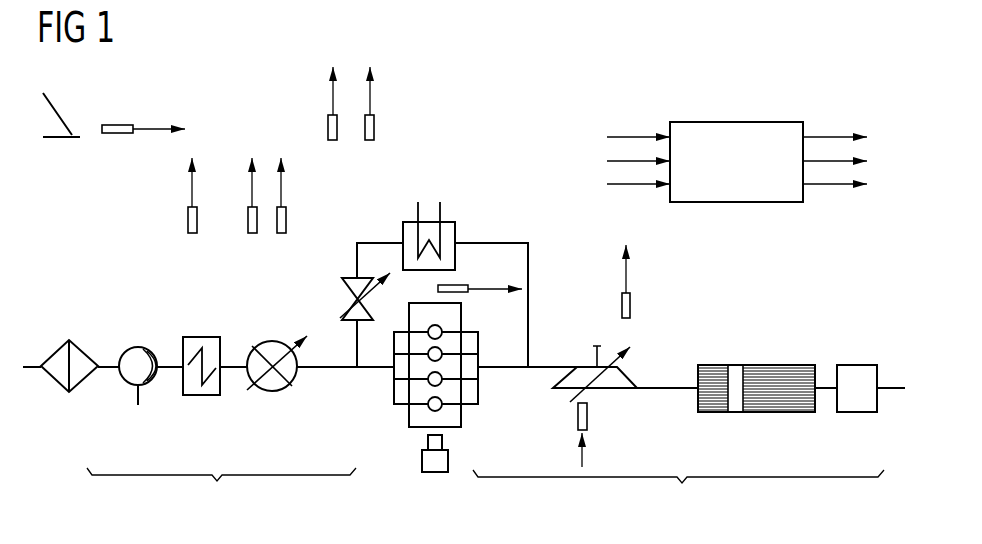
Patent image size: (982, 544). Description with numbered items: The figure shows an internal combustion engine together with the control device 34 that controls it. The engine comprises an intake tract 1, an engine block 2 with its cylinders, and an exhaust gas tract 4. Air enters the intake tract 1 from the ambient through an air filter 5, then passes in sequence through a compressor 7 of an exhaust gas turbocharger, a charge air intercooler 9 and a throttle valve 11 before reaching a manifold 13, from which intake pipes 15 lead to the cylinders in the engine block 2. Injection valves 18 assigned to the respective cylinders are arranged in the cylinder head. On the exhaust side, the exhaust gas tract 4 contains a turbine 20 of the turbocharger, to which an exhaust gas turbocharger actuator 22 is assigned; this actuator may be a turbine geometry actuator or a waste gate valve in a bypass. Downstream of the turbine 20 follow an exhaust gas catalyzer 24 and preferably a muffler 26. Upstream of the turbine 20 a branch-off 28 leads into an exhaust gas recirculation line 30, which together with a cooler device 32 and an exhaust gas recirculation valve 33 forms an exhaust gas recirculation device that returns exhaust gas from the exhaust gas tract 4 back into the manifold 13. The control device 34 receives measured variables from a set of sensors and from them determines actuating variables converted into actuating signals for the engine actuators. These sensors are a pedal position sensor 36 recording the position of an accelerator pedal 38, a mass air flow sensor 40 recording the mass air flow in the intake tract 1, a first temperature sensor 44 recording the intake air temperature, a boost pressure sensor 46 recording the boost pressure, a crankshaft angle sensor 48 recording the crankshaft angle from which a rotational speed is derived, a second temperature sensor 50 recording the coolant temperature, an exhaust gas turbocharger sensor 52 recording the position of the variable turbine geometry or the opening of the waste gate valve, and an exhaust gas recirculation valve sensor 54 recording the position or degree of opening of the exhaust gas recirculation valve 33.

The intake tract 1 is at (221, 489).
The engine block 2 is at (437, 378).
The exhaust gas tract 4 is at (678, 491).
The air filter 5 is at (88, 382).
The compressor 7 is at (140, 347).
The charge air intercooler 9 is at (205, 337).
The throttle valve 11 is at (272, 342).
The manifold 13 is at (315, 368).
The intake pipes 15 is at (401, 407).
The injection valves 18 is at (436, 472).
The turbine 20 is at (635, 377).
The exhaust gas turbocharger actuator 22 is at (587, 418).
The exhaust gas catalyzer 24 is at (756, 365).
The muffler 26 is at (860, 412).
The branch-off 28 is at (527, 378).
The exhaust gas recirculation line 30 is at (530, 300).
The cooler device 32 is at (455, 232).
The exhaust gas recirculation valve 33 is at (356, 278).
The control device 34 is at (737, 122).
The pedal position sensor 36 is at (117, 134).
The accelerator pedal 38 is at (68, 117).
The mass air flow sensor 40 is at (192, 233).
The first temperature sensor 44 is at (252, 233).
The boost pressure sensor 46 is at (281, 233).
The crankshaft angle sensor 48 is at (328, 122).
The second temperature sensor 50 is at (374, 125).
The exhaust gas turbocharger sensor 52 is at (631, 298).
The exhaust gas recirculation valve sensor 54 is at (460, 286).